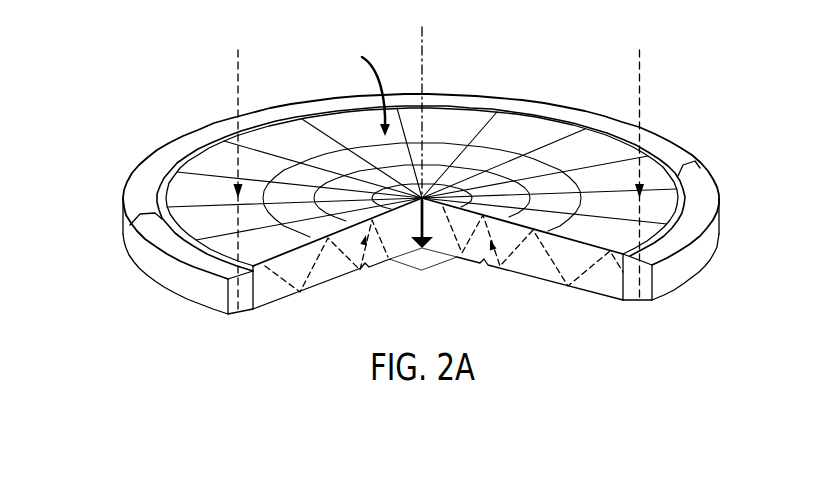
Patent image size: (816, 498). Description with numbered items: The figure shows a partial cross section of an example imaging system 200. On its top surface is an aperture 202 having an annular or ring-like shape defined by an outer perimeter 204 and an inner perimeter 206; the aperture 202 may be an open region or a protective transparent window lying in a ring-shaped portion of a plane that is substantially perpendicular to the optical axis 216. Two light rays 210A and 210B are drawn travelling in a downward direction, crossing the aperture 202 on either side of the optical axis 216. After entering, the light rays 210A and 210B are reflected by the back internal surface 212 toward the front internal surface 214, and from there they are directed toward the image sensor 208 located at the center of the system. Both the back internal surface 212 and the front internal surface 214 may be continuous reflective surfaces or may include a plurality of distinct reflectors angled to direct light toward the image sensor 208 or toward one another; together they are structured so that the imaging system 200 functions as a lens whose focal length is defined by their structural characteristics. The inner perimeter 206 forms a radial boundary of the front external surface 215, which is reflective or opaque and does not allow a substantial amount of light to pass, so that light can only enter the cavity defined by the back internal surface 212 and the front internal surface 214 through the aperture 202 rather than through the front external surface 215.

The imaging system 200 is at (105, 52).
The aperture 202 is at (137, 217).
The outer perimeter 204 is at (157, 153).
The inner perimeter 206 is at (337, 110).
The image sensor 208 is at (427, 260).
The light ray 210A is at (238, 60).
The light ray 210B is at (640, 60).
The back internal surface 212 is at (347, 303).
The front internal surface 214 is at (332, 238).
The front external surface 215 is at (361, 86).
The optical axis 216 is at (422, 60).